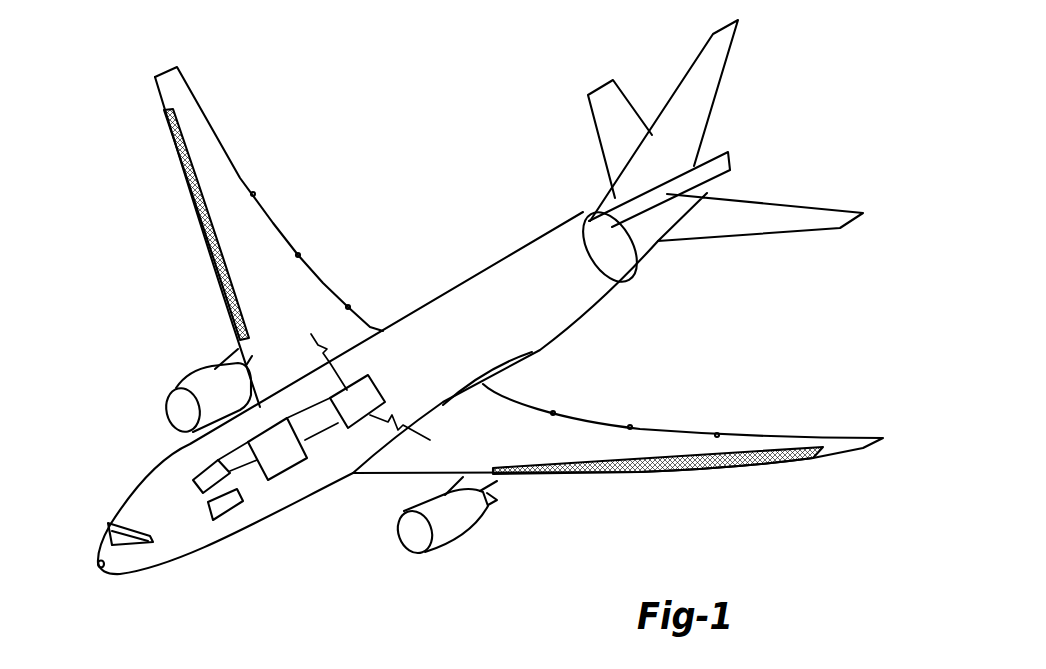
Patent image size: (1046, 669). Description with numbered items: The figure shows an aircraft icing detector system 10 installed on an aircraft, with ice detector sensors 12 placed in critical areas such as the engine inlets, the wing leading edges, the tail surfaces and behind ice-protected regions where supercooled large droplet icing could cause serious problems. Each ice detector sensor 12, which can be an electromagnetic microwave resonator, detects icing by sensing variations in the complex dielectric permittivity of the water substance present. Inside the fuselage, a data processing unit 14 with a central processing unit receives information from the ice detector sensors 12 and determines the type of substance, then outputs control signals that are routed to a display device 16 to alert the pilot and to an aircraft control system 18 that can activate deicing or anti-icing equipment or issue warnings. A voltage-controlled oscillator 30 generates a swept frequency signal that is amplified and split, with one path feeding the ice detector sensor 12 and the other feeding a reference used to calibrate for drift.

The aircraft icing detector system 10 is at (417, 163).
The ice detector sensor 12 is at (203, 240).
The data processing unit 14 is at (287, 482).
The display device 16 is at (219, 520).
The aircraft control system 18 is at (194, 476).
The voltage-controlled oscillator 30 is at (369, 376).